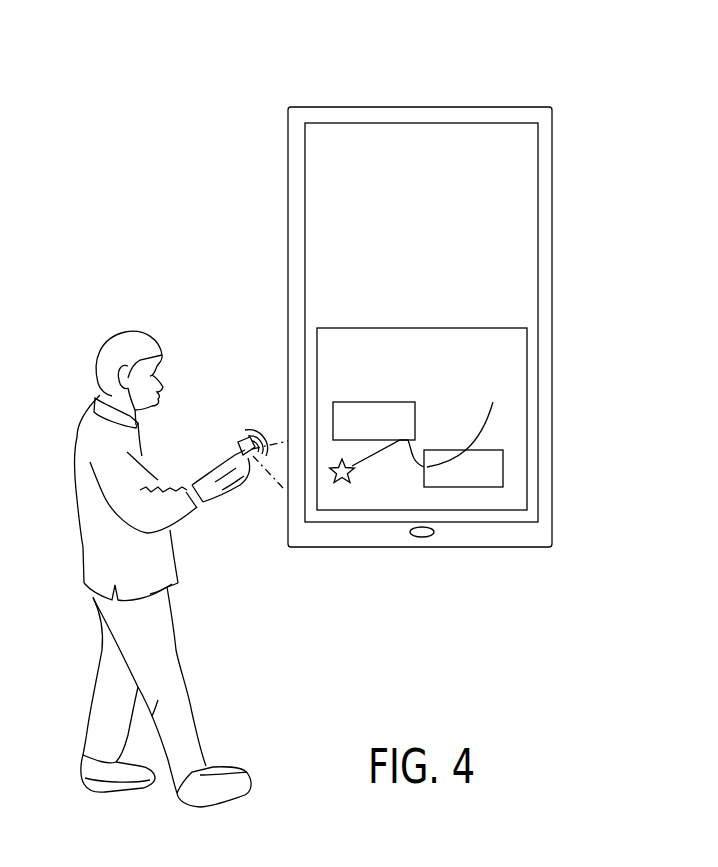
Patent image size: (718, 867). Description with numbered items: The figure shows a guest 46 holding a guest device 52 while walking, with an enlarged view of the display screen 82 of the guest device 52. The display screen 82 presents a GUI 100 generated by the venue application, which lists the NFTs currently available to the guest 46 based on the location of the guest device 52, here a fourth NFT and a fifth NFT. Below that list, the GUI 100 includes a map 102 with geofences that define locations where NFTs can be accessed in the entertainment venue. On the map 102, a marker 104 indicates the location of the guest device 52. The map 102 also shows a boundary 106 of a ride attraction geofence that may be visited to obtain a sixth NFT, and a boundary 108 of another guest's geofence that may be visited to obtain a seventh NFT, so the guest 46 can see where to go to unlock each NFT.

The guest 46 is at (137, 330).
The guest device 52 is at (598, 104).
The display screen 82 is at (538, 152).
The GUI 100 is at (508, 215).
The map 102 is at (425, 328).
The marker 104 is at (350, 475).
The boundary of the ride attraction geofence 106 is at (386, 402).
The boundary of the guest geofence 108 is at (432, 450).